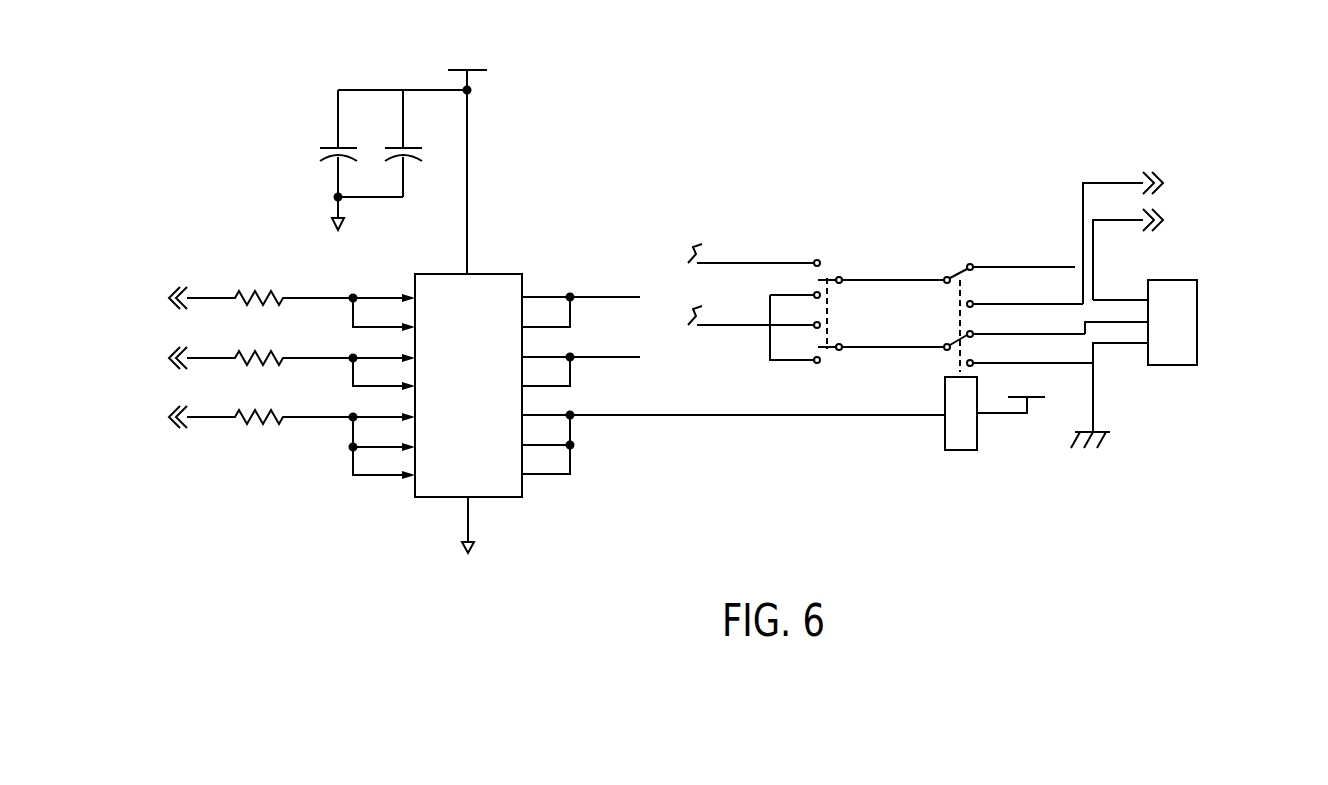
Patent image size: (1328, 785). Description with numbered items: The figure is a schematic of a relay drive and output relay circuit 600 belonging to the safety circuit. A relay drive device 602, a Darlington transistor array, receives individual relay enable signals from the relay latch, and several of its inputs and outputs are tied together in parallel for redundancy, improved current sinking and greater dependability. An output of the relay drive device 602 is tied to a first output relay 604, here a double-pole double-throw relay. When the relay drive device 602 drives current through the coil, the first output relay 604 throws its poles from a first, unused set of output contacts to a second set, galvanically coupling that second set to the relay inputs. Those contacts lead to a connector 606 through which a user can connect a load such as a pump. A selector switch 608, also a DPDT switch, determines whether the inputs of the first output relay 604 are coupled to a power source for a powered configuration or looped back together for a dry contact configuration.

The relay drive and output relay circuit 600 is at (668, 506).
The relay drive device 602 is at (492, 497).
The first output relay 604 is at (954, 227).
The connector 606 is at (1183, 280).
The selector switch 608 is at (817, 208).